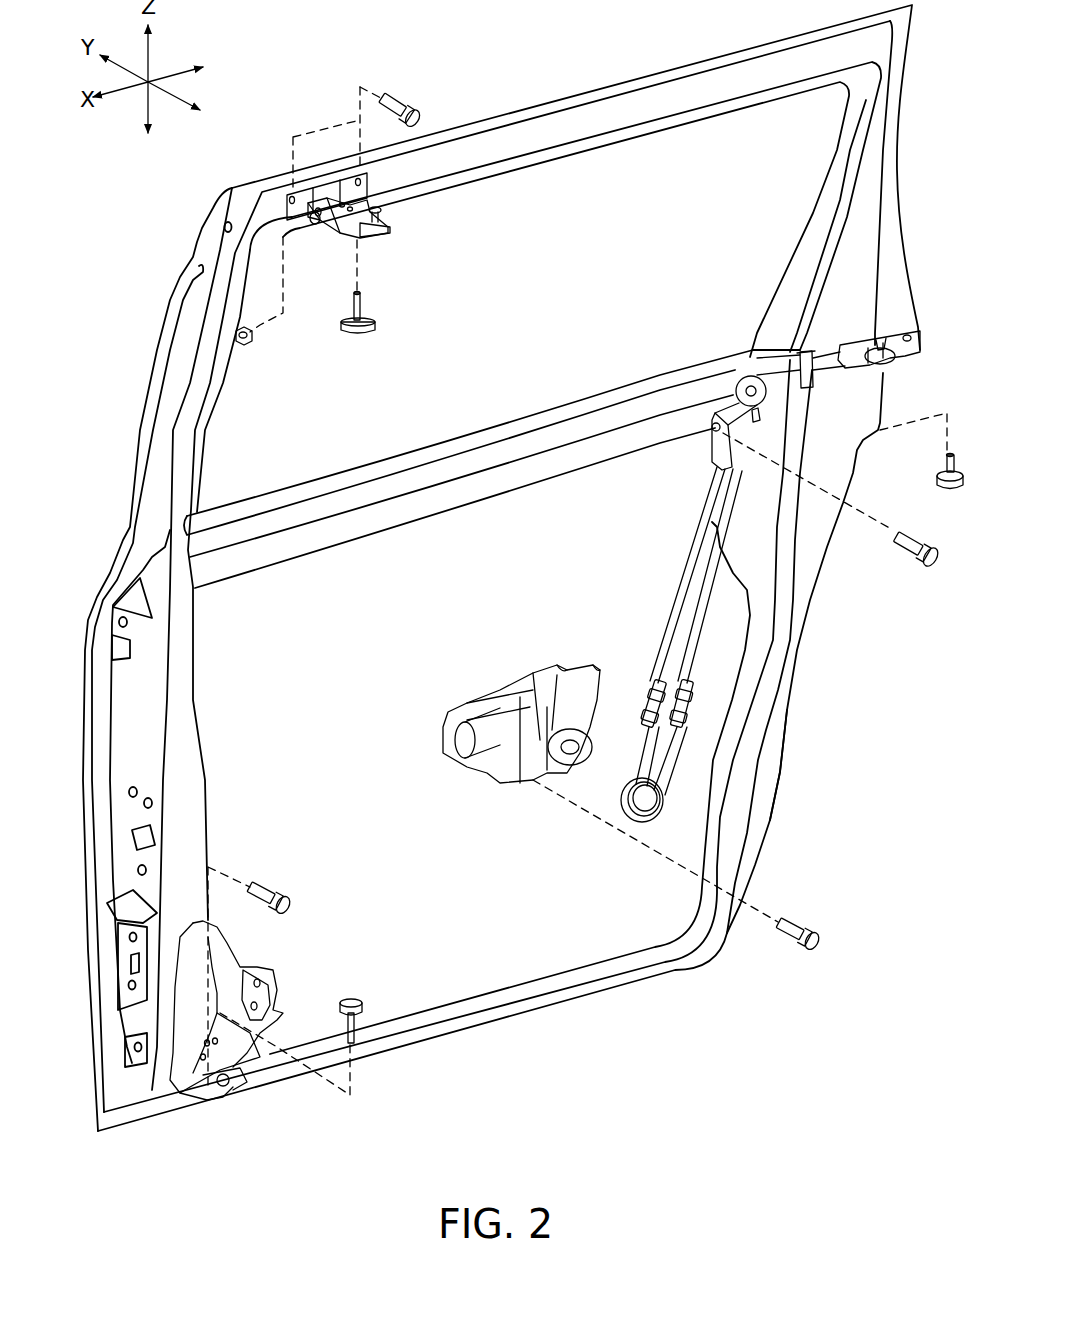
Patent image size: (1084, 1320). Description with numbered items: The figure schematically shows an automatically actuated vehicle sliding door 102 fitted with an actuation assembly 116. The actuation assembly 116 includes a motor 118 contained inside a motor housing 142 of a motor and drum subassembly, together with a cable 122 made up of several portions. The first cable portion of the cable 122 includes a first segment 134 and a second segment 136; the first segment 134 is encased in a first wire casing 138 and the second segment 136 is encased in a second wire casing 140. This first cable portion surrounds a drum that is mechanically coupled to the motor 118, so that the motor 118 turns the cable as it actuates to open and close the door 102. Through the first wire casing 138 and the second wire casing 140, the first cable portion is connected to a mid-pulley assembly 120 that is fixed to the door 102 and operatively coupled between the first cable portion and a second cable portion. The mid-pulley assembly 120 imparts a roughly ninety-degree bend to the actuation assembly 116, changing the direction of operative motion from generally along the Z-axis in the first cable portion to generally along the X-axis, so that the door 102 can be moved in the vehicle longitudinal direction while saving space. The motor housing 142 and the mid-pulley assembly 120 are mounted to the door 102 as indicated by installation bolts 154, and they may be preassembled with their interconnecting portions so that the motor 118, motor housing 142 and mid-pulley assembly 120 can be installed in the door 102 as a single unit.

The door 102 is at (128, 334).
The actuation assembly 116 is at (782, 774).
The motor 118 is at (507, 667).
The mid-pulley assembly 120 is at (715, 357).
The cable 122 is at (680, 740).
The first segment 134 is at (640, 757).
The second segment 136 is at (663, 790).
The first wire casing 138 is at (680, 590).
The second wire casing 140 is at (683, 653).
The motor housing 142 is at (463, 713).
The installation bolts 154 is at (928, 553).